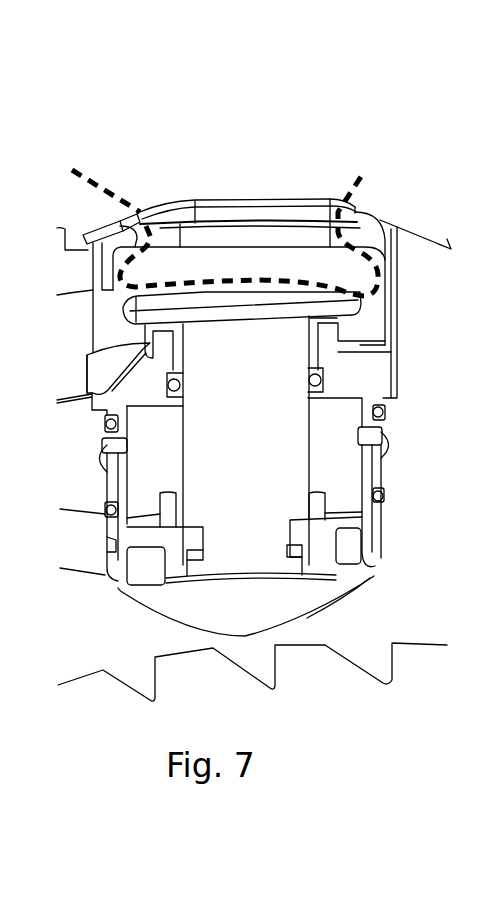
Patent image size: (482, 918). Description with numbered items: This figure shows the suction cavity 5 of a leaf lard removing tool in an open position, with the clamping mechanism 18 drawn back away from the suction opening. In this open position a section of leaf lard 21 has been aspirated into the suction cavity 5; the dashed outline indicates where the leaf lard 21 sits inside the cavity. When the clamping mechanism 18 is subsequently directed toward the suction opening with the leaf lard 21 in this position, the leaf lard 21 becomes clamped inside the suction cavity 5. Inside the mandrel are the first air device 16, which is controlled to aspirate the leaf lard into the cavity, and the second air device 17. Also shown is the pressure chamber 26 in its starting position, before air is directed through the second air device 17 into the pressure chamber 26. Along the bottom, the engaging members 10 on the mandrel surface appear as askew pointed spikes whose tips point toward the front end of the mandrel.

The suction cavity 5 is at (178, 197).
The leaf lard 21 is at (272, 270).
The first air device 16 is at (83, 349).
The clamping mechanism 18 is at (255, 446).
The second air device 17 is at (92, 553).
The pressure chamber 26 is at (252, 614).
The engaging members 10 is at (147, 680).